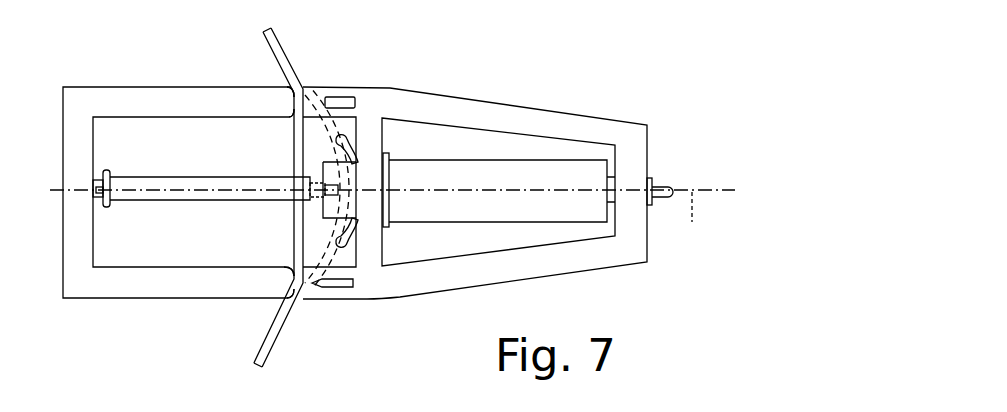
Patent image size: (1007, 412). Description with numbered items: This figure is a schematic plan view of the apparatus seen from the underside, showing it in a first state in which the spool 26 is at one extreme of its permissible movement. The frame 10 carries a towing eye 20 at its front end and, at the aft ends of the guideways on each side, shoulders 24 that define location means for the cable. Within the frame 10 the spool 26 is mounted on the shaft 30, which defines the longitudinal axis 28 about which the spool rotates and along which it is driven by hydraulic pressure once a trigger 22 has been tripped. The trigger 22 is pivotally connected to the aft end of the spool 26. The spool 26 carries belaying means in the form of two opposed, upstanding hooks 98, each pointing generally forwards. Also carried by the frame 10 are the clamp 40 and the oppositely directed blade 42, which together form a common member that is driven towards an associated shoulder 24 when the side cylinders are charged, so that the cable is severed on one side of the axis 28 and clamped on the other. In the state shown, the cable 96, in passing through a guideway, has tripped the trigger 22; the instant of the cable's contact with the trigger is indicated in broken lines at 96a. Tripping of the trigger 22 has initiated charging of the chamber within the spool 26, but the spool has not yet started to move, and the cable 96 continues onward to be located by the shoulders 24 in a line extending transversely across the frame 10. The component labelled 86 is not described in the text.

The frame 10 is at (505, 266).
The towing eye 20 is at (658, 188).
The trigger 22 is at (325, 188).
The shoulders 24 is at (293, 105).
The spool 26 is at (477, 167).
The longitudinal axis 28 is at (693, 222).
The shaft 30 is at (138, 183).
The clamp 40 is at (340, 100).
The blade 42 is at (338, 287).
The collar 86 is at (103, 173).
The cable 96 is at (270, 47).
The cable at instant of trigger contact 96a is at (330, 240).
The hooks 98 is at (355, 137).